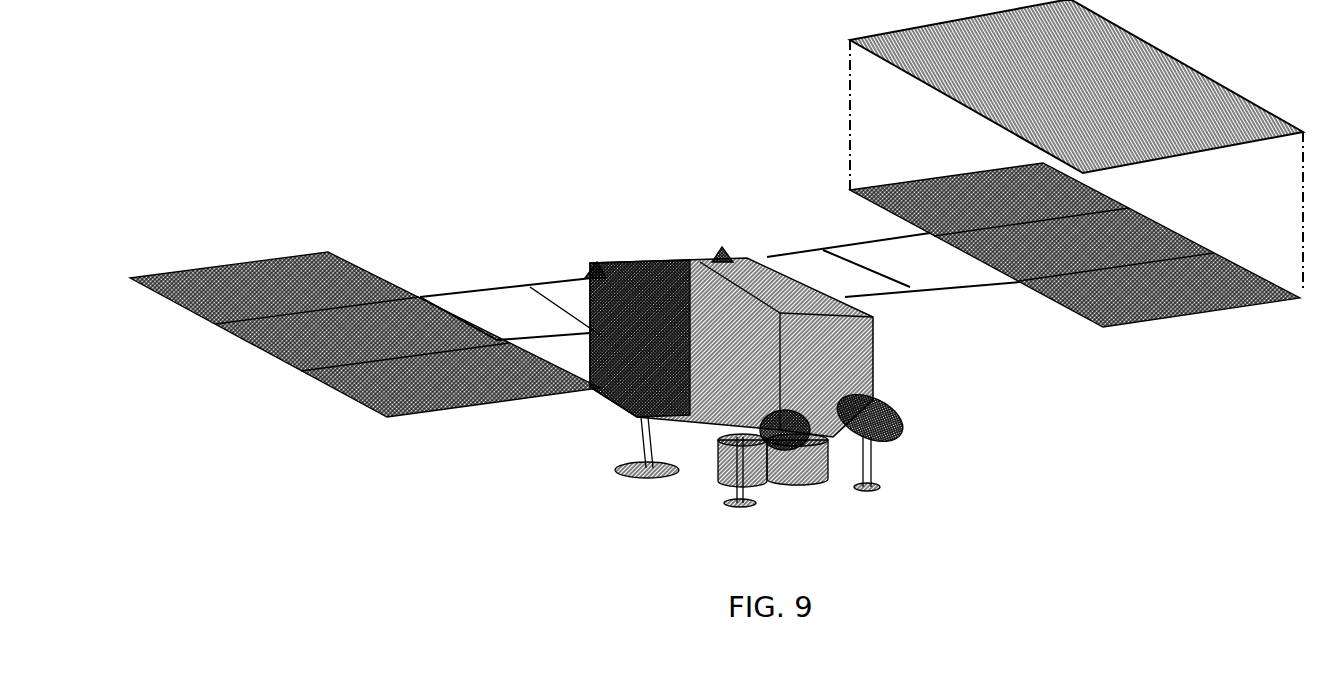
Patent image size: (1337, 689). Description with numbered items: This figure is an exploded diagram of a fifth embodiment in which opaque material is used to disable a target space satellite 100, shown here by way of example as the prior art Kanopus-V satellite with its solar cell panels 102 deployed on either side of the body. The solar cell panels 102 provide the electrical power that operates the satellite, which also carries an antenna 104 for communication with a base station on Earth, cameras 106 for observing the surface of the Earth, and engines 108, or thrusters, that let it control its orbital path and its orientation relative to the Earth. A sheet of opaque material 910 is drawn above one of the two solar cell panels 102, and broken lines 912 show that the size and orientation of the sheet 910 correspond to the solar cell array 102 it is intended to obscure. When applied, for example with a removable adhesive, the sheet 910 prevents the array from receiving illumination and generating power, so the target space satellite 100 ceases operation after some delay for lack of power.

The target space satellite 100 is at (588, 248).
The solar cell panels 102 is at (240, 238).
The antenna 104 is at (605, 470).
The cameras 106 is at (825, 488).
The engines 108 is at (913, 408).
The sheet of opaque material 910 is at (937, 93).
The broken lines 912 is at (840, 122).